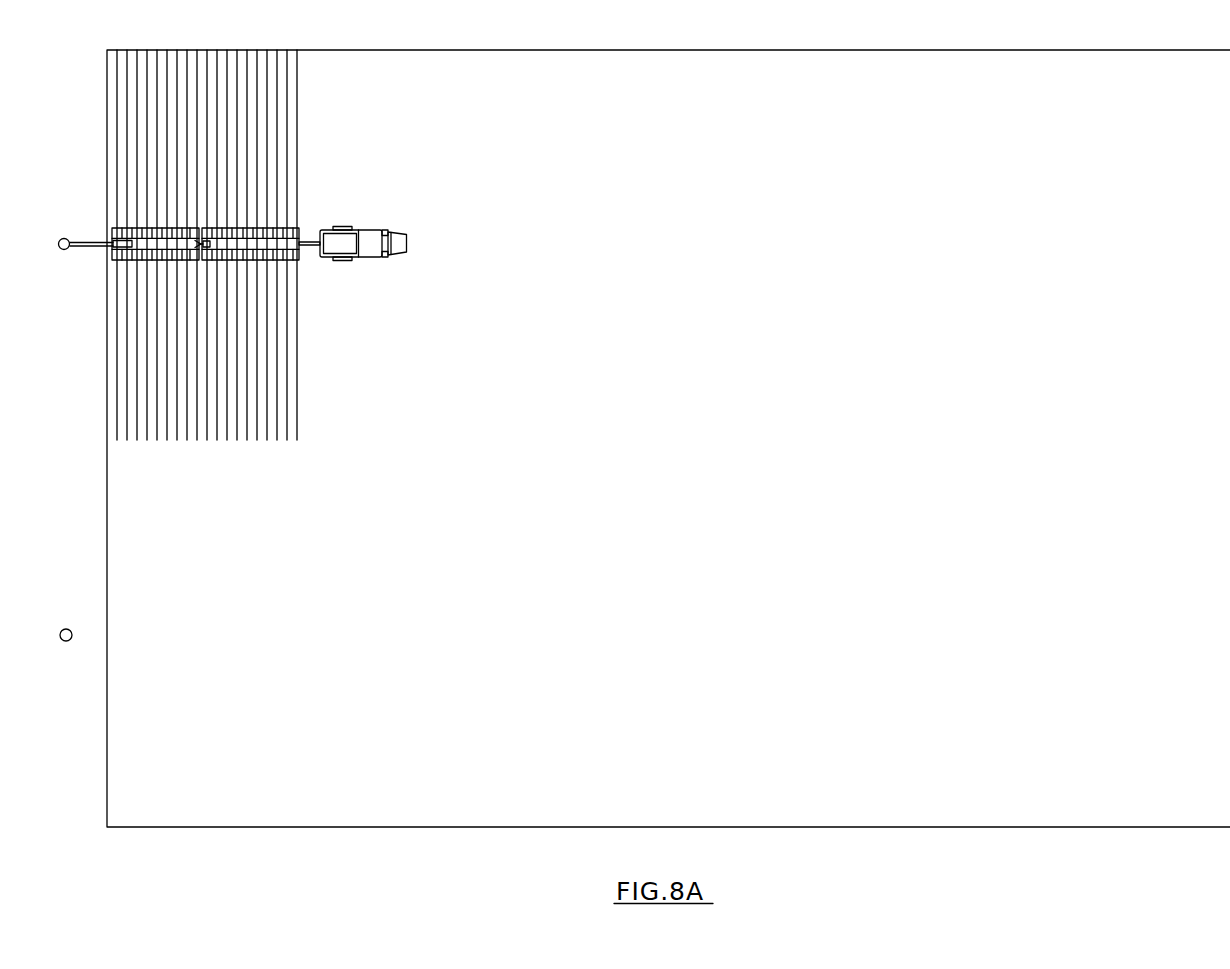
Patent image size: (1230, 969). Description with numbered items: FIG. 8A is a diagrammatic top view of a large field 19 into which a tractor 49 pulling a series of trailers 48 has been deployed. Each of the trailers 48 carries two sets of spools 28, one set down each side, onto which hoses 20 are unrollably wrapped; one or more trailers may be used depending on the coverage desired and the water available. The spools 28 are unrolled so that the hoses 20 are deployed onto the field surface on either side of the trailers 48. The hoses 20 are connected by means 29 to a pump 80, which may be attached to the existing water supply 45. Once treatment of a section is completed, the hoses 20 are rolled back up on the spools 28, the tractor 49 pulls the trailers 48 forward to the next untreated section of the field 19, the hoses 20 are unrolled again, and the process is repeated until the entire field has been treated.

The field 19 is at (460, 78).
The hoses 20 is at (297, 119).
The spools 28 is at (295, 255).
The connecting means 29 is at (92, 247).
The existing water supply 45 is at (60, 631).
The trailers 48 is at (290, 243).
The tractor 49 is at (372, 238).
The pump 80 is at (59, 238).